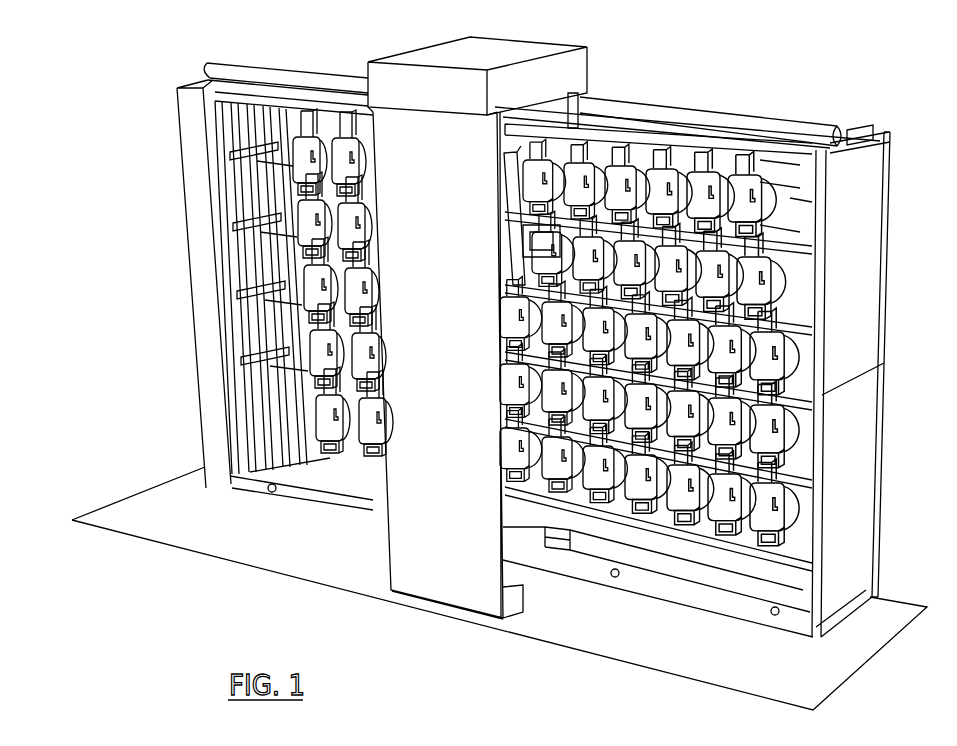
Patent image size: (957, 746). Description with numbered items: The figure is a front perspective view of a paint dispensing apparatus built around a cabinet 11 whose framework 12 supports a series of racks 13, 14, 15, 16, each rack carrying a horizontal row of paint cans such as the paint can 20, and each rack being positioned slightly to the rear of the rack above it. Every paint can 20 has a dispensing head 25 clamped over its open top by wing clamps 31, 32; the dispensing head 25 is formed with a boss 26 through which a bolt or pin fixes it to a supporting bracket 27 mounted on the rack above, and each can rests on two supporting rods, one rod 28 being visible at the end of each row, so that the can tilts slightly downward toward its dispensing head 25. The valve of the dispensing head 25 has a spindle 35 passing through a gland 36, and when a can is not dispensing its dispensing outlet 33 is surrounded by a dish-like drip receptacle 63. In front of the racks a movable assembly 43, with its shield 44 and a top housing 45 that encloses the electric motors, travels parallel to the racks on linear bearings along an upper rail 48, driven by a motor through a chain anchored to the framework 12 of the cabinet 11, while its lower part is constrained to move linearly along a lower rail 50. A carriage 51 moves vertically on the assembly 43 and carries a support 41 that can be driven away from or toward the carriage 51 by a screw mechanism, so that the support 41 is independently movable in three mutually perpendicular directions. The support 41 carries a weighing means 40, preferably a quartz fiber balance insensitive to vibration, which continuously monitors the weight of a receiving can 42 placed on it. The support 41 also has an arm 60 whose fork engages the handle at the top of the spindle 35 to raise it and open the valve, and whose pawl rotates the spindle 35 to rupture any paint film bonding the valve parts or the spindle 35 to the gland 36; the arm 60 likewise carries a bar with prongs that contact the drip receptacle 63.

The cabinet 11 is at (187, 256).
The framework 12 is at (262, 200).
The rack 13 is at (256, 162).
The rack 14 is at (264, 230).
The rack 15 is at (280, 298).
The rack 16 is at (290, 364).
The paint can 20 is at (680, 165).
The dispensing head 25 is at (647, 183).
The boss 26 is at (765, 172).
The supporting bracket 27 is at (740, 172).
The supporting rod 28 is at (770, 227).
The wing clamp 31 is at (636, 188).
The wing clamp 32 is at (716, 170).
The dispensing outlet 33 is at (800, 240).
The spindle 35 is at (770, 185).
The gland 36 is at (812, 202).
The weighing means 40 is at (777, 295).
The support 41 is at (787, 320).
The receiving can 42 is at (890, 285).
The movable assembly 43 is at (372, 510).
The shield 44 is at (407, 540).
The top housing 45 is at (427, 54).
The upper rail 48 is at (248, 78).
The lower rail 50 is at (585, 558).
The carriage 51 is at (785, 375).
The arm 60 is at (517, 170).
The drip receptacle 63 is at (790, 463).